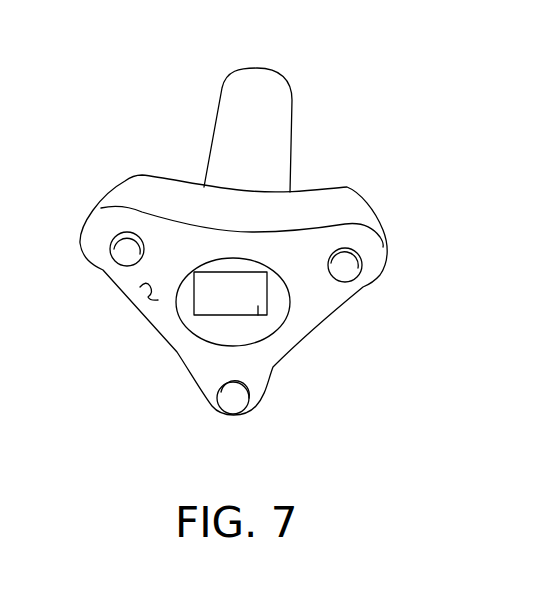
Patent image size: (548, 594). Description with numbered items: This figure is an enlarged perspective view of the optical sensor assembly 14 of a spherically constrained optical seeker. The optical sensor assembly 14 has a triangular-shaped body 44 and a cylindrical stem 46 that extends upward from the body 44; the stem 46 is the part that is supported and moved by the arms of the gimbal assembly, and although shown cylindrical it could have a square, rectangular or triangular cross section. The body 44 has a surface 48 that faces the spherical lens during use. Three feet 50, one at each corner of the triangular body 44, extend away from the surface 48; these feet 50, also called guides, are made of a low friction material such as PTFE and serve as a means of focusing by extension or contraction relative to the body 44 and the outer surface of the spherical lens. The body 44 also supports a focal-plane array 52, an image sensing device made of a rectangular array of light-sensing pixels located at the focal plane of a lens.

The optical sensor assembly 14 is at (251, 250).
The triangular-shaped body 44 is at (308, 290).
The cylindrical stem 46 is at (245, 80).
The surface 48 is at (139, 291).
The feet 50 is at (123, 260).
The focal-plane array 52 is at (257, 315).